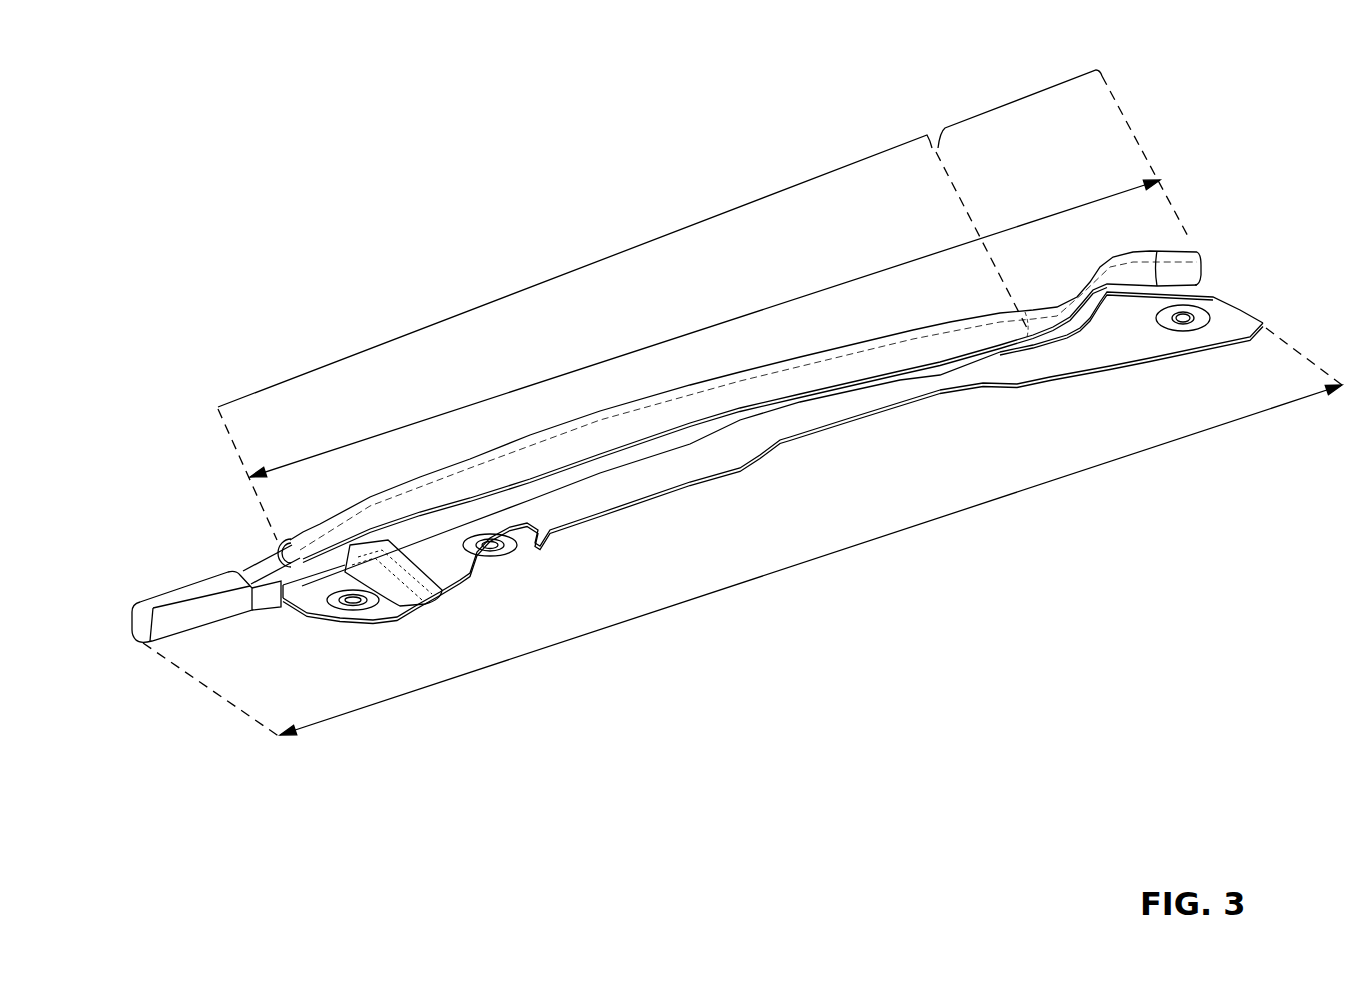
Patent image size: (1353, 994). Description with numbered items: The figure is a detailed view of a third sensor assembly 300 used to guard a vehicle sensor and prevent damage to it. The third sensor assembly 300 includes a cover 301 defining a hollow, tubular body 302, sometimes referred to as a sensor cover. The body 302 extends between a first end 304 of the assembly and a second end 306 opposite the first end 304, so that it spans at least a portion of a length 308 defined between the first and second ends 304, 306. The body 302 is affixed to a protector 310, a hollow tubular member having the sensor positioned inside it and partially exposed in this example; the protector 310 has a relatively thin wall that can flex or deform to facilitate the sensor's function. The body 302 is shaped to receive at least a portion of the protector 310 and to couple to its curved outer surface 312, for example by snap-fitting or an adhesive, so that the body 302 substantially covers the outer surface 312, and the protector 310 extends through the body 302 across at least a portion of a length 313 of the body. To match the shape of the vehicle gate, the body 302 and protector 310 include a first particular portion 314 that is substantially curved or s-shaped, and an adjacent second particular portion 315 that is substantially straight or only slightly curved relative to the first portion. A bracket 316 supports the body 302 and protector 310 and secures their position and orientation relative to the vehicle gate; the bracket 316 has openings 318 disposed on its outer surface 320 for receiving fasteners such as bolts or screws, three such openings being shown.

The third sensor assembly 300 is at (741, 385).
The cover 301 is at (678, 427).
The body 302 is at (943, 322).
The first end 304 is at (133, 603).
The second end 306 is at (1200, 260).
The length 308 is at (827, 553).
The protector 310 is at (257, 568).
The outer surface 312 is at (288, 603).
The length 313 is at (708, 328).
The first particular portion 314 is at (1015, 100).
The second particular portion 315 is at (597, 258).
The bracket 316 is at (807, 433).
The openings 318 is at (497, 541).
The outer surface 320 is at (1143, 355).